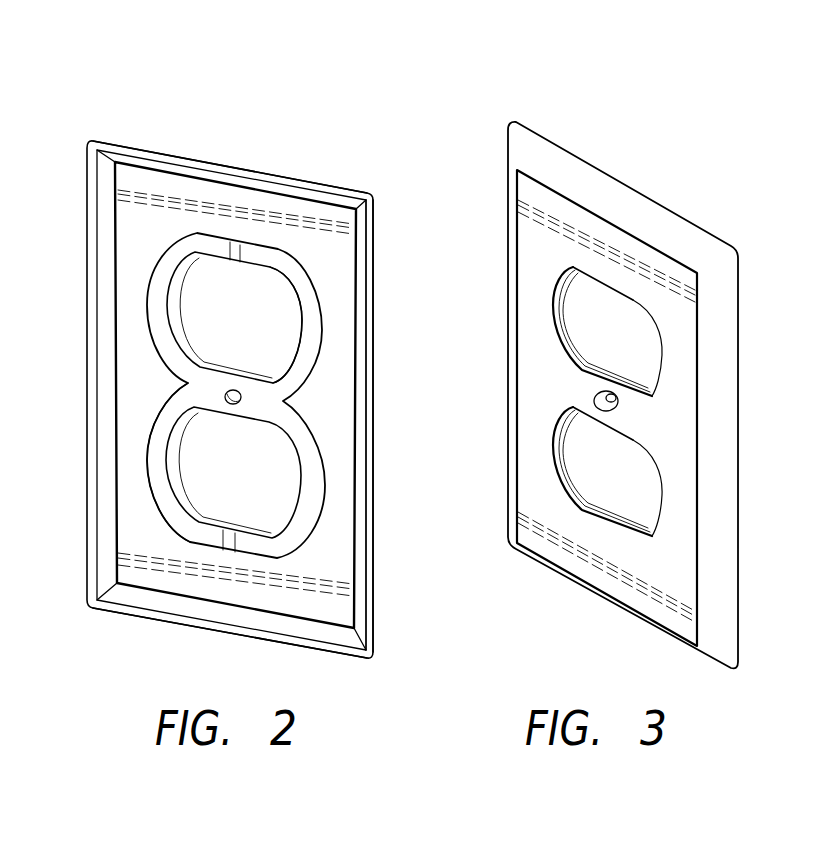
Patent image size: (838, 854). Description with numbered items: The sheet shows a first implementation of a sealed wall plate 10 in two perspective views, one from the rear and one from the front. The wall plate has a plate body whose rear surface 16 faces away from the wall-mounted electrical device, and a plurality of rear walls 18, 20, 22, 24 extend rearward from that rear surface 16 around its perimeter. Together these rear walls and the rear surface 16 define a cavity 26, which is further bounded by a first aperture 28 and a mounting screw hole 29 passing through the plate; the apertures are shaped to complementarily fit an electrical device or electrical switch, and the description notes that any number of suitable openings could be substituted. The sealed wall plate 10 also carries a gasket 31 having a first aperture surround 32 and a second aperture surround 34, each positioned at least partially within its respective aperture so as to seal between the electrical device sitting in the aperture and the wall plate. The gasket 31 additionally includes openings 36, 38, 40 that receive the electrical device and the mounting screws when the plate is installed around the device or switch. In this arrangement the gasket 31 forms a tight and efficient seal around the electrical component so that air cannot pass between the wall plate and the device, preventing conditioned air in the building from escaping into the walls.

In FIG. 2, the sealed wall plate 10 is at (296, 117).
In FIG. 3, the sealed wall plate 10 is at (621, 147).
In FIG. 2, the rear surface 16 is at (341, 445).
In FIG. 2, the rear wall 18 is at (90, 154).
In FIG. 2, the rear wall 20 is at (167, 160).
In FIG. 2, the rear wall 22 is at (362, 518).
In FIG. 2, the rear wall 24 is at (127, 615).
In FIG. 2, the cavity 26 is at (128, 292).
In FIG. 3, the first aperture 28 is at (632, 369).
In FIG. 3, the mounting screw hole 29 is at (618, 408).
In FIG. 2, the gasket 31 is at (278, 249).
In FIG. 2, the first aperture surround 32 is at (167, 247).
In FIG. 2, the second aperture surround 34 is at (147, 479).
In FIG. 2, the opening 36 is at (173, 484).
In FIG. 3, the opening 36 is at (576, 410).
In FIG. 2, the opening 38 is at (226, 393).
In FIG. 2, the opening 40 is at (292, 330).
In FIG. 3, the opening 40 is at (577, 325).